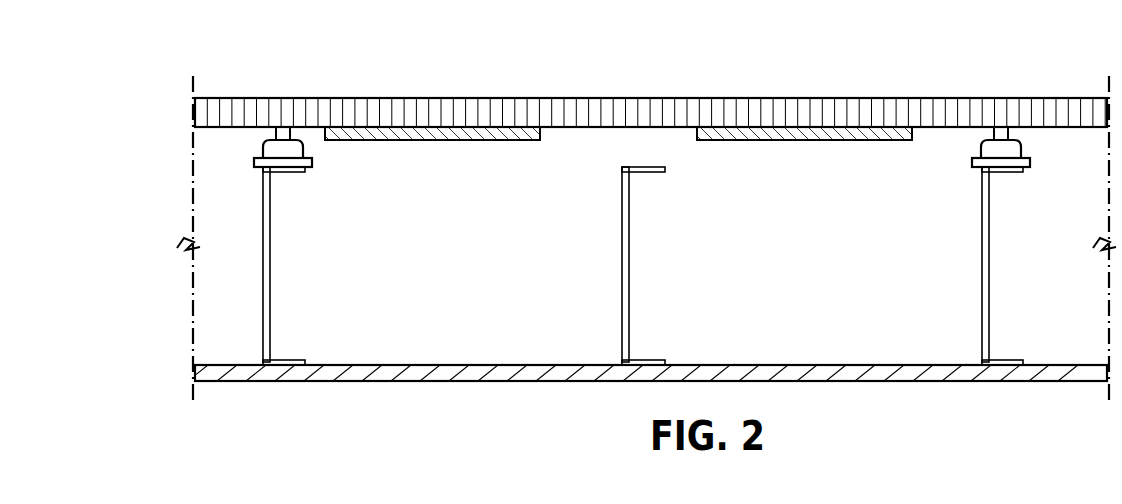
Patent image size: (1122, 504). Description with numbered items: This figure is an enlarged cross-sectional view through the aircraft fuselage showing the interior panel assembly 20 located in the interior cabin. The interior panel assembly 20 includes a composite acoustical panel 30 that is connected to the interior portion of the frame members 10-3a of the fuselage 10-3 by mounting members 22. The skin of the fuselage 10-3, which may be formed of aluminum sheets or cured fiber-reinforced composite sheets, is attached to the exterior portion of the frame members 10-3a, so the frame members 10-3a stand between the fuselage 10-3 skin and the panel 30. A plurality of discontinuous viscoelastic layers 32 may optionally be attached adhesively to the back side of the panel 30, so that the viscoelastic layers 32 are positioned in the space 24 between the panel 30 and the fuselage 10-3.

The interior panel assembly 20 is at (147, 155).
The mounting members 22 is at (284, 150).
The space 24 is at (470, 283).
The composite acoustical panel 30 is at (602, 96).
The discontinuous viscoelastic layers 32 is at (395, 131).
The fuselage 10-3 is at (443, 382).
The frame members 10-3a is at (265, 265).